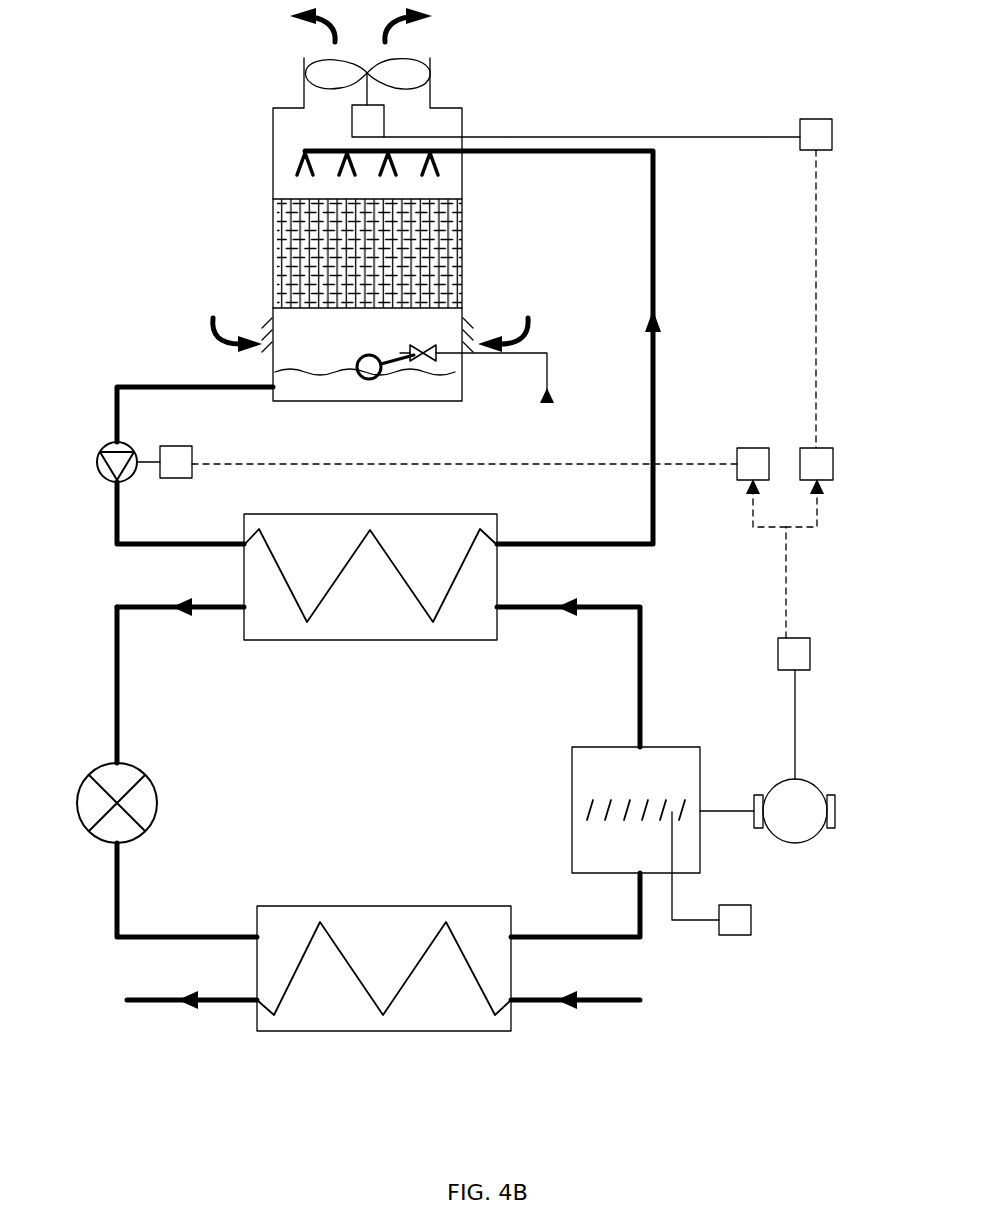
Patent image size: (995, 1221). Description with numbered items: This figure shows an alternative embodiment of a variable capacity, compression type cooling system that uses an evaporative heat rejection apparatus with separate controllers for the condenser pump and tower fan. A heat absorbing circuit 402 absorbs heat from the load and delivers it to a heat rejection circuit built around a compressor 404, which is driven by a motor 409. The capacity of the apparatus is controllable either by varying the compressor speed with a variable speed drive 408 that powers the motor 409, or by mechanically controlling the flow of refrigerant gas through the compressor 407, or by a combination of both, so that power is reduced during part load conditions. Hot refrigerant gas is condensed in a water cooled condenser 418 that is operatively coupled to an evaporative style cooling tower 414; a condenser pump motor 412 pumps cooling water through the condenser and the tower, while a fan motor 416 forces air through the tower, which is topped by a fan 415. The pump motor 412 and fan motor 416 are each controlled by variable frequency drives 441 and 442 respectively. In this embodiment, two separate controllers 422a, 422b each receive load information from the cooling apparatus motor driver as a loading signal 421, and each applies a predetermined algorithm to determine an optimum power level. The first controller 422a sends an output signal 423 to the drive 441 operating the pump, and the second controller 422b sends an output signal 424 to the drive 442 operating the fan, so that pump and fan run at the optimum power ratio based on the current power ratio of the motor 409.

The heat absorbing circuit 402 is at (378, 905).
The compressor 404 is at (598, 748).
The mechanical refrigerant flow control 407 is at (733, 937).
The variable speed drive 408 is at (775, 655).
The motor 409 is at (770, 780).
The condenser pump motor 412 is at (110, 480).
The evaporative style cooling tower 414 is at (272, 165).
The cooling tower fan 415 is at (423, 50).
The fan motor 416 is at (393, 113).
The water cooled condenser 418 is at (363, 642).
The loading signal 421 is at (786, 590).
The controller 422a is at (752, 448).
The controller 422b is at (820, 448).
The output signal 423 is at (597, 462).
The output signal 424 is at (816, 325).
The variable frequency drive 441 is at (187, 450).
The variable frequency drive 442 is at (815, 120).